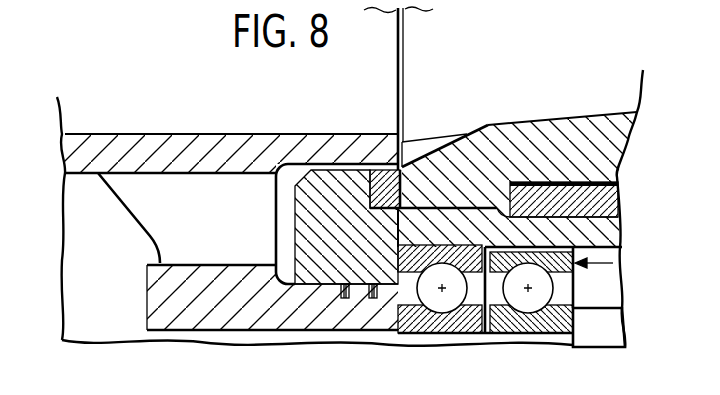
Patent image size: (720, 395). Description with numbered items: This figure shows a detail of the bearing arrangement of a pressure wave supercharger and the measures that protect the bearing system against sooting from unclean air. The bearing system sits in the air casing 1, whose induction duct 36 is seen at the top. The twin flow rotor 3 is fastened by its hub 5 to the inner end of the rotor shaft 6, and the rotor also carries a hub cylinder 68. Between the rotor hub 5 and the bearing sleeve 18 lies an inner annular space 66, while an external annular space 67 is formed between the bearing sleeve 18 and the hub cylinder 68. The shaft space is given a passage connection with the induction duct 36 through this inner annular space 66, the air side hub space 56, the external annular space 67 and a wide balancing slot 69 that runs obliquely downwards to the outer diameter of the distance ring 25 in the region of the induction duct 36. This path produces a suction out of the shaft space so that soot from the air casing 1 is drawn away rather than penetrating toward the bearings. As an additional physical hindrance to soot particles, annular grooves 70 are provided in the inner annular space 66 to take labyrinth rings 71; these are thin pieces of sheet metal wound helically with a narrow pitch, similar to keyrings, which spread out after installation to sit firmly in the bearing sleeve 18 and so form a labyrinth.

The air casing 1 is at (568, 140).
The twin flow rotor 3 is at (333, 115).
The hub 5 is at (163, 295).
The rotor shaft 6 is at (602, 330).
The bearing sleeve 18 is at (325, 192).
The distance ring 25 is at (387, 187).
The induction duct 36 is at (456, 51).
The air side hub space 56 is at (106, 243).
The inner annular space 66 is at (317, 284).
The external annular space 67 is at (318, 170).
The hub cylinder 68 is at (103, 150).
The balancing slot 69 is at (428, 147).
The annular grooves 70 is at (347, 286).
The labyrinth rings 71 is at (313, 258).